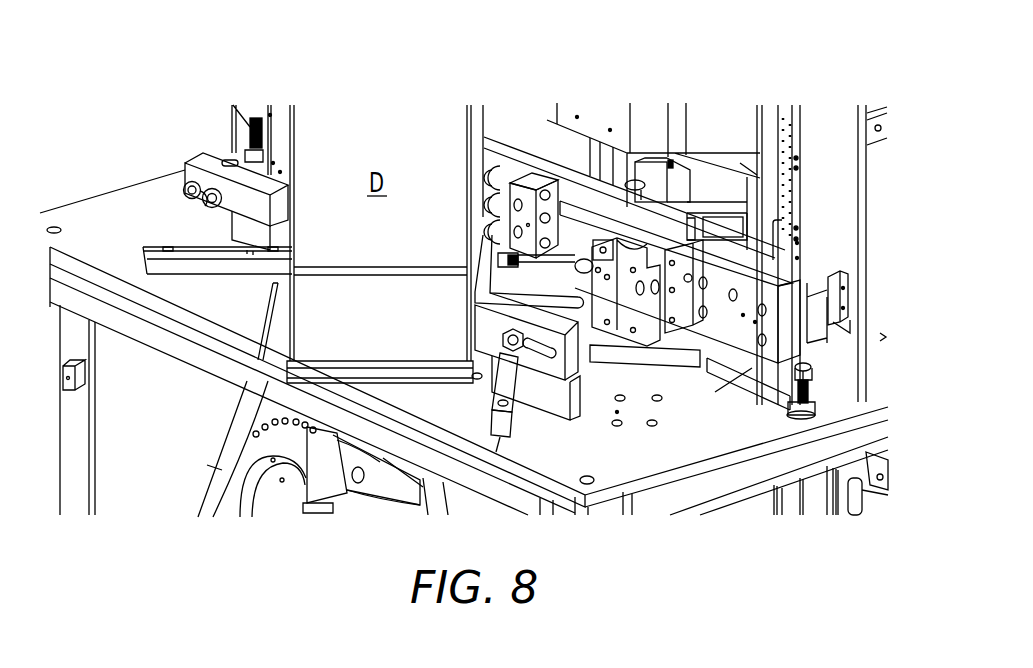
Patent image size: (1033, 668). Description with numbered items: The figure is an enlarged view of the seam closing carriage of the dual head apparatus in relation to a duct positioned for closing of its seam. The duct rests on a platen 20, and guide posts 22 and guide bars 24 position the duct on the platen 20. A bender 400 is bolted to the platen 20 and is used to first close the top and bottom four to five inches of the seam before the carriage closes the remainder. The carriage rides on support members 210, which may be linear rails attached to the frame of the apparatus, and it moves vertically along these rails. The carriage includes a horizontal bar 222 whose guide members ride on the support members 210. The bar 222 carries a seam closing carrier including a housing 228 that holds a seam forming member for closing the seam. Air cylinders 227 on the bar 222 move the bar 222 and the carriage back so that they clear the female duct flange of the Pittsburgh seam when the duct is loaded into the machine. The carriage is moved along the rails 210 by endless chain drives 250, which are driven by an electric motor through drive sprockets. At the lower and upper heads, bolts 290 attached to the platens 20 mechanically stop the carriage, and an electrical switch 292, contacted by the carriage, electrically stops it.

The platen 20 is at (643, 467).
The guide posts 22 is at (183, 268).
The guide bars 24 is at (240, 208).
The support members 210 is at (770, 120).
The horizontal bar 222 is at (577, 213).
The air cylinders 227 is at (632, 308).
The housing 228 is at (535, 177).
The endless chain drives 250 is at (785, 107).
The bolts 290 is at (815, 375).
The electrical switch 292 is at (840, 297).
The bender 400 is at (650, 150).